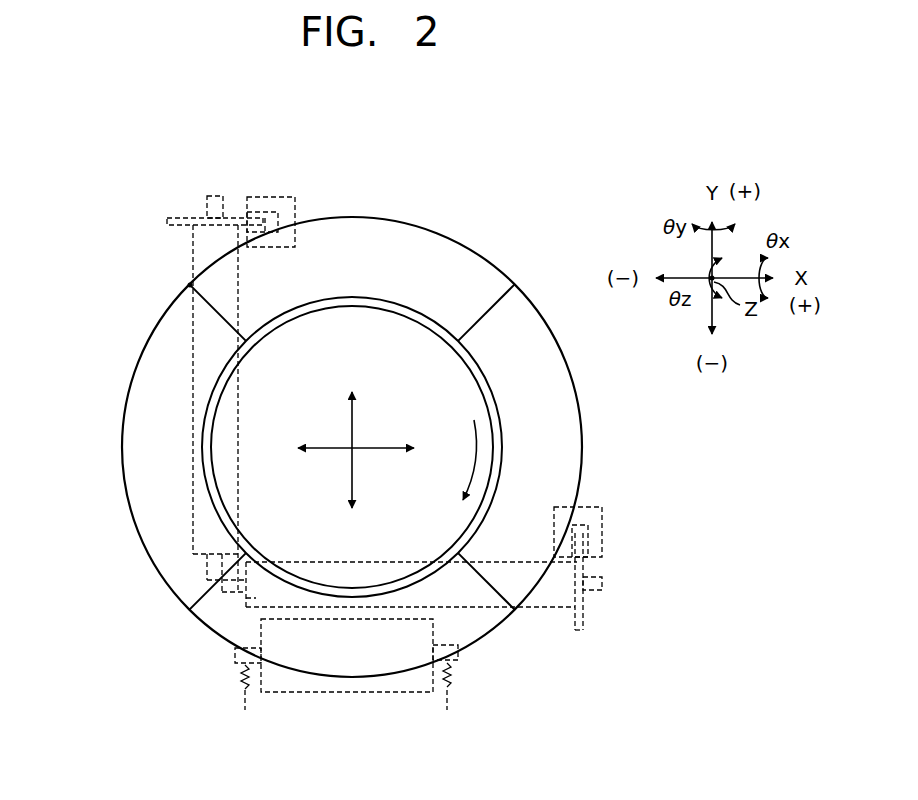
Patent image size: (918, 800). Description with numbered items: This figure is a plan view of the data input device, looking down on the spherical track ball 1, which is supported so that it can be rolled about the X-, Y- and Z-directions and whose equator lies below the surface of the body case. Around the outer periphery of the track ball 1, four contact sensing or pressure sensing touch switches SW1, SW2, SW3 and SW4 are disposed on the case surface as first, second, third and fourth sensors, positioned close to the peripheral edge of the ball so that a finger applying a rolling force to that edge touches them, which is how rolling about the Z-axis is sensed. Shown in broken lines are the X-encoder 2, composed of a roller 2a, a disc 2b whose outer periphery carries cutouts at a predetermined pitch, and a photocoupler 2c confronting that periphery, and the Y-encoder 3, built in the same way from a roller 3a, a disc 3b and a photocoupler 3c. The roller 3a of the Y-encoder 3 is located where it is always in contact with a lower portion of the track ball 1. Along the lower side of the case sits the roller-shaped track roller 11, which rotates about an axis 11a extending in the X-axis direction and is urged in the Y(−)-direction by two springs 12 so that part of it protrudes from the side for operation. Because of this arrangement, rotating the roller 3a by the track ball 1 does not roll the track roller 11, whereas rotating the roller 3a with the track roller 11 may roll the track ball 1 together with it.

The track ball 1 is at (390, 342).
The X-encoder 2 is at (198, 371).
The roller 2a is at (196, 347).
The disc 2b is at (182, 218).
The photocoupler 2c is at (270, 197).
The Y-encoder 3 is at (415, 605).
The roller 3a is at (246, 598).
The disc 3b is at (584, 624).
The photocoupler 3c is at (603, 535).
The track roller 11 is at (297, 688).
The axis 11a is at (233, 660).
The springs 12 is at (243, 690).
The touch switch SW1 is at (370, 245).
The touch switch SW2 is at (537, 427).
The touch switch SW3 is at (382, 656).
The touch switch SW4 is at (163, 488).